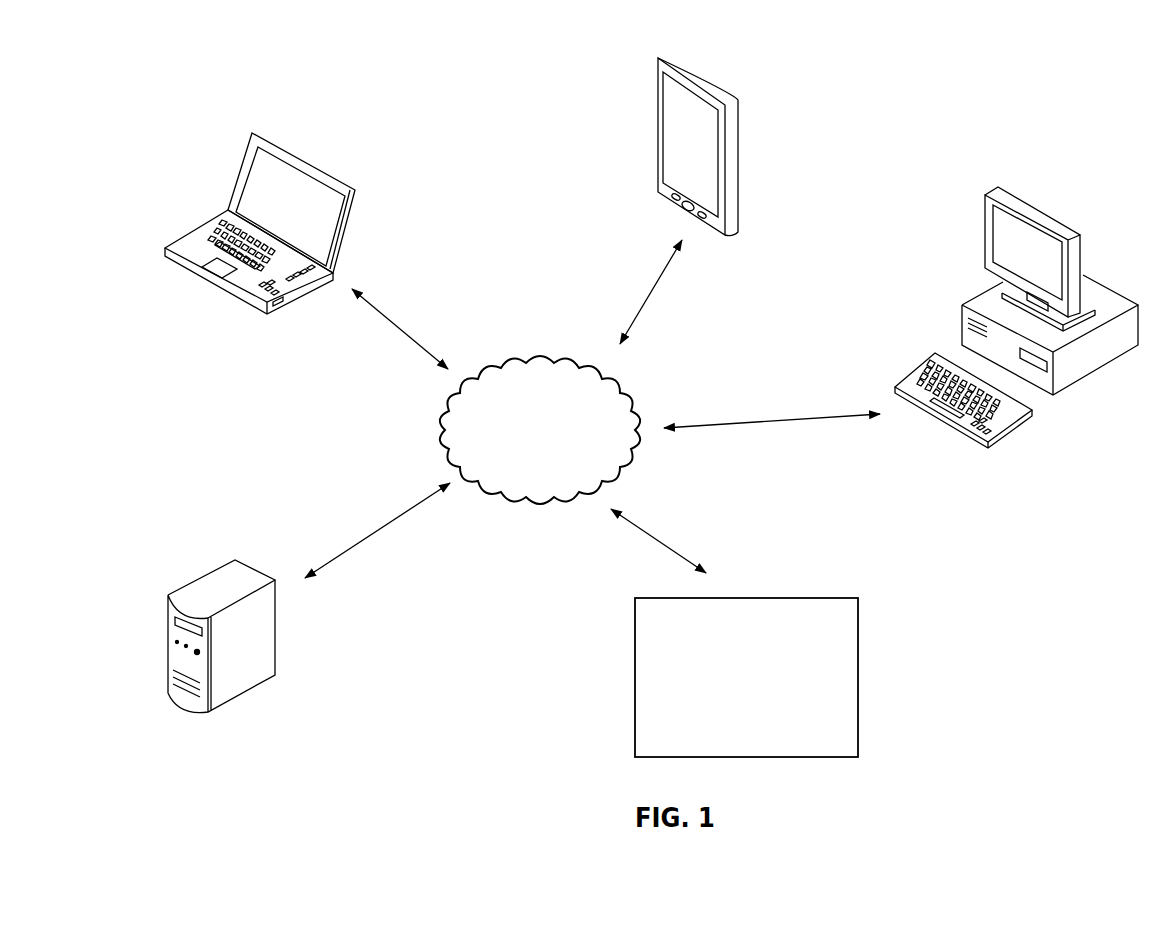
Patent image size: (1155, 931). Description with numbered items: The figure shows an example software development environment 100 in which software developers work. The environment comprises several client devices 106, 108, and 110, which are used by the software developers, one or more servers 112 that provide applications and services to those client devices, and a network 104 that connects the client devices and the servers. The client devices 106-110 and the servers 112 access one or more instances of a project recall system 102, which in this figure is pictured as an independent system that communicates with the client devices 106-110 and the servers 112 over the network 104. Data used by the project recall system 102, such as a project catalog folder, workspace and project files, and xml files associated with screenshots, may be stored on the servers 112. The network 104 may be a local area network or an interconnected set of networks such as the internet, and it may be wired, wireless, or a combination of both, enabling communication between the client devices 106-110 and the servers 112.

The software development environment 100 is at (1056, 108).
The project recall system 102 is at (746, 677).
The network 104 is at (540, 430).
The client device 106 is at (322, 150).
The client device 108 is at (732, 71).
The client device 110 is at (966, 286).
The server 112 is at (191, 574).